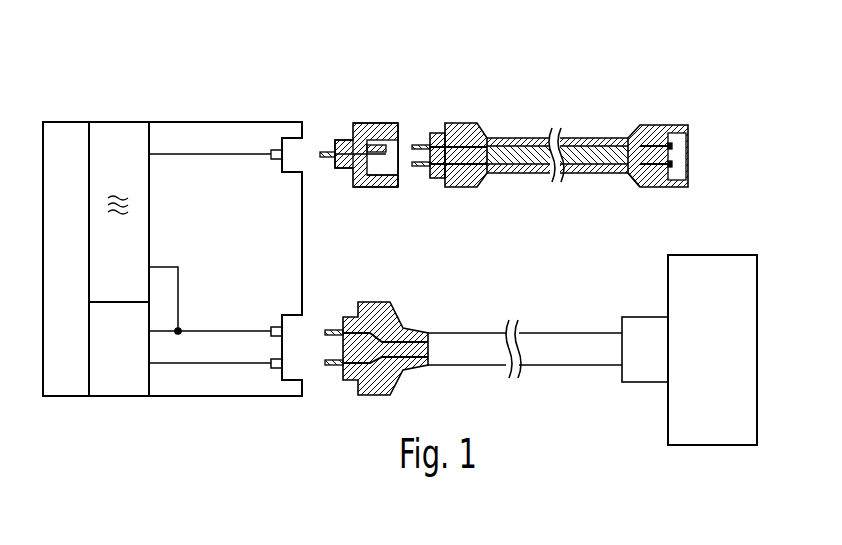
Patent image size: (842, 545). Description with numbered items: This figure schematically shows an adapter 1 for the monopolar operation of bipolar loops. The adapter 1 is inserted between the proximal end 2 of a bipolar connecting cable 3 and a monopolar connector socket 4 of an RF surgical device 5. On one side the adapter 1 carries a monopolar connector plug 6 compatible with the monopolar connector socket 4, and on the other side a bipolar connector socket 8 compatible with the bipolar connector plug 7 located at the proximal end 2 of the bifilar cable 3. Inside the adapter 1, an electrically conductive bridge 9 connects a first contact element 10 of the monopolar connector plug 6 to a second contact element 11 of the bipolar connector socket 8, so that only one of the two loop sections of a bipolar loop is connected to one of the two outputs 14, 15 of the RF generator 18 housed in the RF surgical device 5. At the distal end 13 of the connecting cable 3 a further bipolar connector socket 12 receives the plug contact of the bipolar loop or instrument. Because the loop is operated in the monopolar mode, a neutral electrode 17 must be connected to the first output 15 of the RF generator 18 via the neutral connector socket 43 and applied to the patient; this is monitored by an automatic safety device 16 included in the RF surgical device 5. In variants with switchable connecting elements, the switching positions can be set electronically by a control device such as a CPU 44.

The adapter 1 is at (378, 114).
The proximal end 2 is at (468, 186).
The bipolar connecting cable 3 is at (582, 128).
The monopolar connector socket 4 is at (287, 121).
The RF surgical device 5 is at (195, 116).
The monopolar connector plug 6 is at (340, 170).
The bipolar connector plug 7 is at (435, 176).
The bipolar connector socket 8 is at (393, 176).
The electrically conductive bridge 9 is at (351, 141).
The first contact element 10 is at (323, 160).
The second contact element 11 is at (383, 144).
The further bipolar connector socket 12 is at (680, 176).
The distal end 13 is at (636, 188).
The output 14 is at (152, 157).
The first output 15 is at (152, 266).
The safety device 16 is at (113, 375).
The neutral electrode 17 is at (701, 361).
The RF generator 18 is at (117, 137).
The neutral connector socket 43 is at (295, 377).
The CPU 44 is at (65, 375).